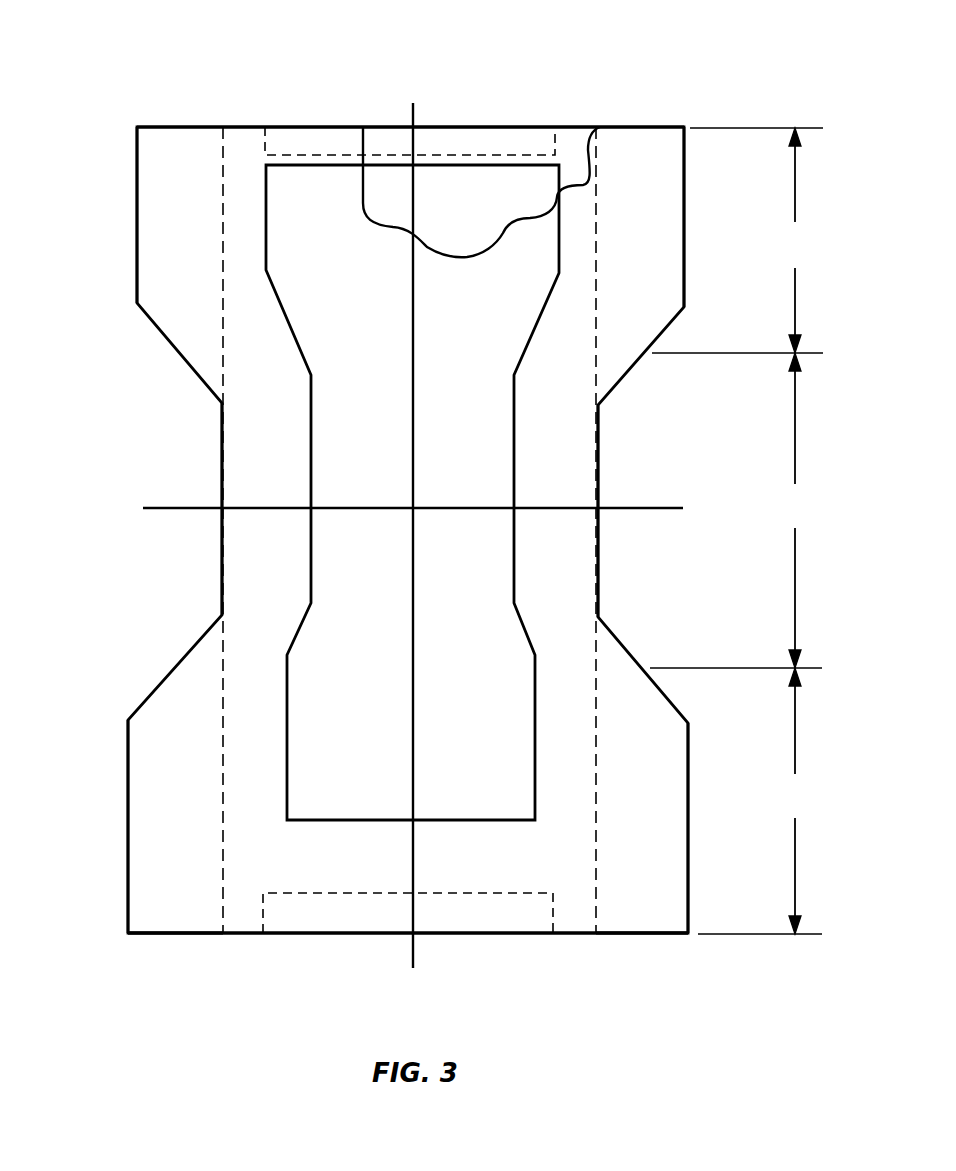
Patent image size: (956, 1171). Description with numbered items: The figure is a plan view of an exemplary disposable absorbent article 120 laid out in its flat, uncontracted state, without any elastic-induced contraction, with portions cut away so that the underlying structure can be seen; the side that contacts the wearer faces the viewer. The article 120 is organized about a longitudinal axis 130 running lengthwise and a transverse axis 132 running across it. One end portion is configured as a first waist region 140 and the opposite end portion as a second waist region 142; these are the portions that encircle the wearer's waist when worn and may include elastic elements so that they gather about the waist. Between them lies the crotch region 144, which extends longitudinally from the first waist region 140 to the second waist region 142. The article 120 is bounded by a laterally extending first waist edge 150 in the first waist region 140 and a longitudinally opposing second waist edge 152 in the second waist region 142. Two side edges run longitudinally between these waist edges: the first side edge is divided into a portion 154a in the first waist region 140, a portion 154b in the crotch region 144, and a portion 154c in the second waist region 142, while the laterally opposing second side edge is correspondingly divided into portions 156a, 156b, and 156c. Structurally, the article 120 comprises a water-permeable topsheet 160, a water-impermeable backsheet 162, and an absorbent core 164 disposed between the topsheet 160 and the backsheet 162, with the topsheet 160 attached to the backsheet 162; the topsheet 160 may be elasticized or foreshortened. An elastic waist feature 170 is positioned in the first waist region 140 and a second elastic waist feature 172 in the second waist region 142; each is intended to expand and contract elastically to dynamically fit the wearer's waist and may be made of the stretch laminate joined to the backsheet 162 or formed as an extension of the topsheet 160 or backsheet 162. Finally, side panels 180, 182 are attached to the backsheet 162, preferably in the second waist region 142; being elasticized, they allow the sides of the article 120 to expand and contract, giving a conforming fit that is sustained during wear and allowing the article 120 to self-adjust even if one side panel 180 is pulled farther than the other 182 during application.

The disposable absorbent article 120 is at (107, 209).
The longitudinal axis 130 is at (415, 149).
The transverse axis 132 is at (193, 508).
The first waist region 140 is at (737, 240).
The second waist region 142 is at (760, 801).
The crotch region 144 is at (736, 510).
The first waist edge 150 is at (587, 127).
The second waist edge 152 is at (594, 935).
The first side edge portion in first waist region 154a is at (137, 253).
The first side edge portion in crotch region 154b is at (222, 420).
The first side edge portion in second waist region 154c is at (128, 808).
The second side edge portion in first waist region 156a is at (684, 222).
The second side edge portion in crotch region 156b is at (598, 470).
The second side edge portion in second waist region 156c is at (688, 878).
The topsheet 160 is at (211, 197).
The backsheet 162 is at (513, 155).
The absorbent core 164 is at (488, 212).
The elastic waist feature 170 is at (313, 140).
The elastic waist feature 172 is at (482, 915).
The side panel 180 is at (165, 915).
The side panel 182 is at (665, 917).